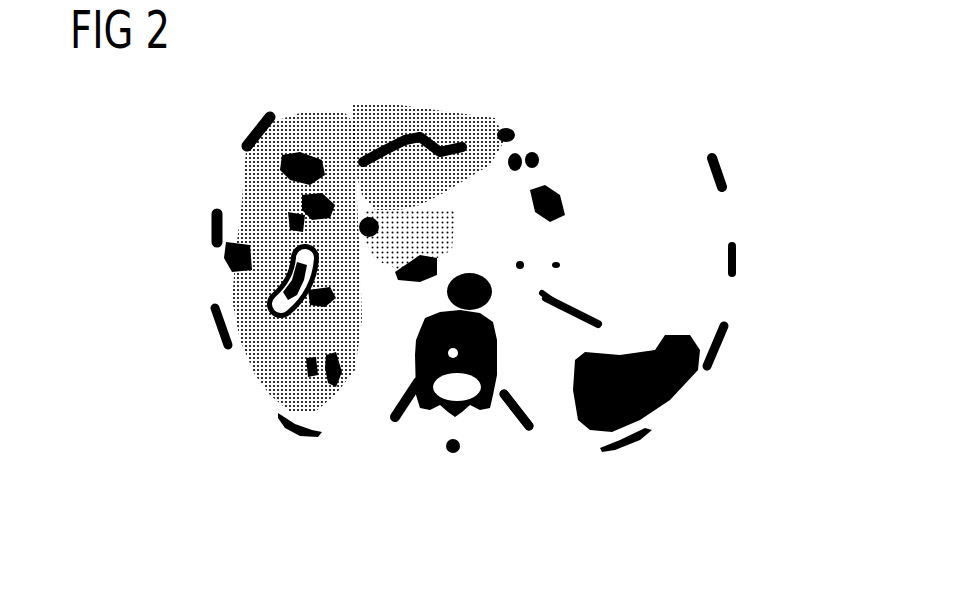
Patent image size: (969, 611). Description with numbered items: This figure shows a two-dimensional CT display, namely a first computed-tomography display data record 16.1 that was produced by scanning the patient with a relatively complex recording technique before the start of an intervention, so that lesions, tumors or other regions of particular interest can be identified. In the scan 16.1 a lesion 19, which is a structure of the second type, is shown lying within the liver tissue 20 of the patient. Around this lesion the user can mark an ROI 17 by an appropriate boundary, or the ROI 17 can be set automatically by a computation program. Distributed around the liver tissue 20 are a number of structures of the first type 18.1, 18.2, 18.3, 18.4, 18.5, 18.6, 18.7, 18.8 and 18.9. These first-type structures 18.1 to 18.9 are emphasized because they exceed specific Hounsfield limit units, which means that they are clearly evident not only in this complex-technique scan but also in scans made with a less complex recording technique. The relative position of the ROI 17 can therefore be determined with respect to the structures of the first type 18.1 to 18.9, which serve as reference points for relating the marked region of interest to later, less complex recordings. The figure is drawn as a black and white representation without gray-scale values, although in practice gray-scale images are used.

The first computed-tomography display data record 16.1 is at (116, 167).
The ROI 17 is at (266, 305).
The structure of the first type 18.1 is at (240, 135).
The structure of the first type 18.2 is at (212, 232).
The structure of the first type 18.3 is at (213, 333).
The structure of the first type 18.4 is at (296, 438).
The structure of the first type 18.5 is at (480, 412).
The structure of the first type 18.6 is at (633, 440).
The structure of the first type 18.7 is at (727, 345).
The structure of the first type 18.8 is at (738, 262).
The structure of the first type 18.9 is at (725, 175).
The lesion 19 is at (277, 258).
The liver tissue 20 is at (306, 106).